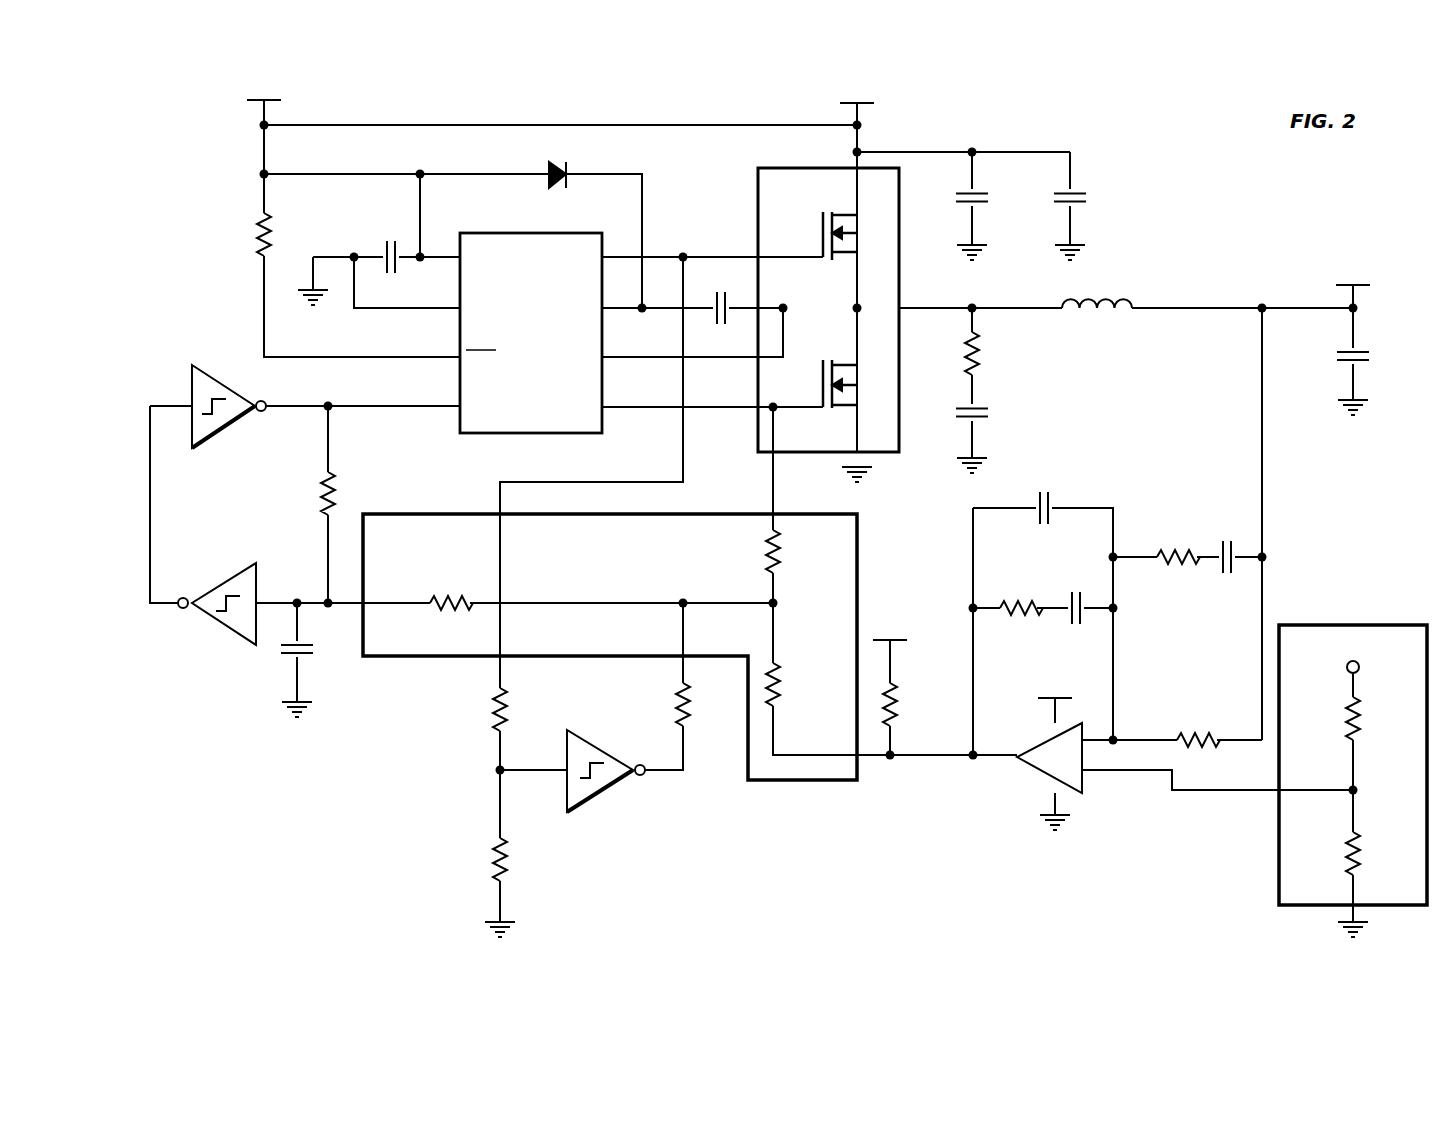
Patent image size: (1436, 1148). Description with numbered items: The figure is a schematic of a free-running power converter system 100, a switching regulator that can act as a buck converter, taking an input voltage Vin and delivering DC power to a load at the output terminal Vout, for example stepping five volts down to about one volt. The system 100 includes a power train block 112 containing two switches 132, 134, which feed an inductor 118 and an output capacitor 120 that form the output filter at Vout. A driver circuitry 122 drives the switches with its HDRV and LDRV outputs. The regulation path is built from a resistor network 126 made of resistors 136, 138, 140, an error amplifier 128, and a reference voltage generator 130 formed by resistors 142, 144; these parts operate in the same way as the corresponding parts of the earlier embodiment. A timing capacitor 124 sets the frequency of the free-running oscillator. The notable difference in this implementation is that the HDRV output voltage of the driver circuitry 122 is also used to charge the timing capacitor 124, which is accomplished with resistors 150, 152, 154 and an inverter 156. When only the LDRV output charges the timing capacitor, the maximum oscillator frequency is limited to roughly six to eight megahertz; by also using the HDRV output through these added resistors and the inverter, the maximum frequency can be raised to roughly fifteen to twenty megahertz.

The power converter system 100 is at (1252, 211).
The power train block 112 is at (782, 168).
The inductor 118 is at (1111, 292).
The output capacitor 120 is at (1360, 350).
The driver circuitry 122 is at (485, 433).
The timing capacitor 124 is at (288, 656).
The resistor network 126 is at (779, 781).
The error amplifier 128 is at (1037, 771).
The reference voltage generator 130 is at (1326, 625).
The switch 132 is at (842, 217).
The switch 134 is at (847, 364).
The resistor 136 is at (432, 601).
The resistor 138 is at (765, 566).
The resistor 140 is at (778, 670).
The resistor 142 is at (1347, 705).
The resistor 144 is at (1347, 848).
The resistor 150 is at (494, 705).
The resistor 152 is at (492, 856).
The resistor 154 is at (670, 700).
The inverter 156 is at (630, 783).